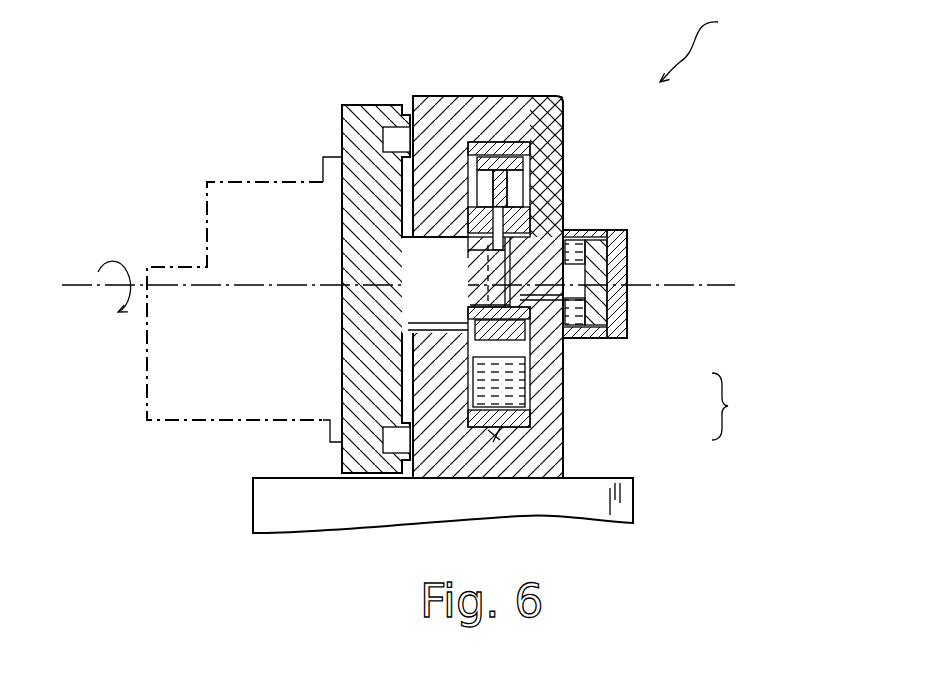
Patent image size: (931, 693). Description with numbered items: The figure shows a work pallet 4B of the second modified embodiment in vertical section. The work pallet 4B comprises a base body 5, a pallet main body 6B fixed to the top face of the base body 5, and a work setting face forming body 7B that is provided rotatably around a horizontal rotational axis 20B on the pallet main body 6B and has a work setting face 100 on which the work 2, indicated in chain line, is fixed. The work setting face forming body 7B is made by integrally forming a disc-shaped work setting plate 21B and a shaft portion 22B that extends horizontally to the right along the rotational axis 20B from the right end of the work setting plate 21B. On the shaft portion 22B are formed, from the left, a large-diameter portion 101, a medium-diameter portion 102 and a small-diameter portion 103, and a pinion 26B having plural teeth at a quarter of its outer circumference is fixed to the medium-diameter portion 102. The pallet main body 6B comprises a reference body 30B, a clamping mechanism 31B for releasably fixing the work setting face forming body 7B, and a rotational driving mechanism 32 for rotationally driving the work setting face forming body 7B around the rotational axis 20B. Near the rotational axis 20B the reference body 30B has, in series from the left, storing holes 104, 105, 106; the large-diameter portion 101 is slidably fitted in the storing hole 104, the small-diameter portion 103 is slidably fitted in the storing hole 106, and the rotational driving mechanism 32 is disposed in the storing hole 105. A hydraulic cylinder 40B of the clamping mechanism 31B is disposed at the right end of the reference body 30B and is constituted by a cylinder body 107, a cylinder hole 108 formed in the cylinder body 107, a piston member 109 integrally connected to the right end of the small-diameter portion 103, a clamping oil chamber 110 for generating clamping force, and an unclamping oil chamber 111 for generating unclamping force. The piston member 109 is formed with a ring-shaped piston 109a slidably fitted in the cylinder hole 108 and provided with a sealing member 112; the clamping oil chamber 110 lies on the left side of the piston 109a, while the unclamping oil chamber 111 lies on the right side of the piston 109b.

The work 2 is at (197, 420).
The work pallet 4B is at (702, 46).
The base body 5 is at (637, 493).
The pallet main body 6B is at (538, 96).
The work setting face forming body 7B is at (343, 103).
The rotational axis 20B is at (72, 292).
The work setting plate 21B is at (340, 134).
The shaft portion 22B is at (477, 295).
The pinion 26B is at (563, 140).
The reference body 30B is at (497, 95).
The clamping mechanism 31B is at (629, 338).
The rotational driving mechanism 32 is at (493, 430).
The hydraulic cylinder 40B is at (630, 288).
The work setting face 100 is at (345, 302).
The large-diameter portion 101 is at (378, 317).
The medium-diameter portion 102 is at (476, 354).
The small-diameter portion 103 is at (622, 252).
The storing hole 104 is at (400, 248).
The storing hole 105 is at (470, 142).
The storing hole 106 is at (558, 225).
The cylinder body 107 is at (630, 272).
The cylinder hole 108 is at (587, 245).
The piston member 109 is at (743, 406).
The piston 109a is at (598, 330).
The piston 109b is at (585, 335).
The clamping oil chamber 110 is at (575, 340).
The unclamping oil chamber 111 is at (630, 300).
The sealing member 112 is at (622, 233).